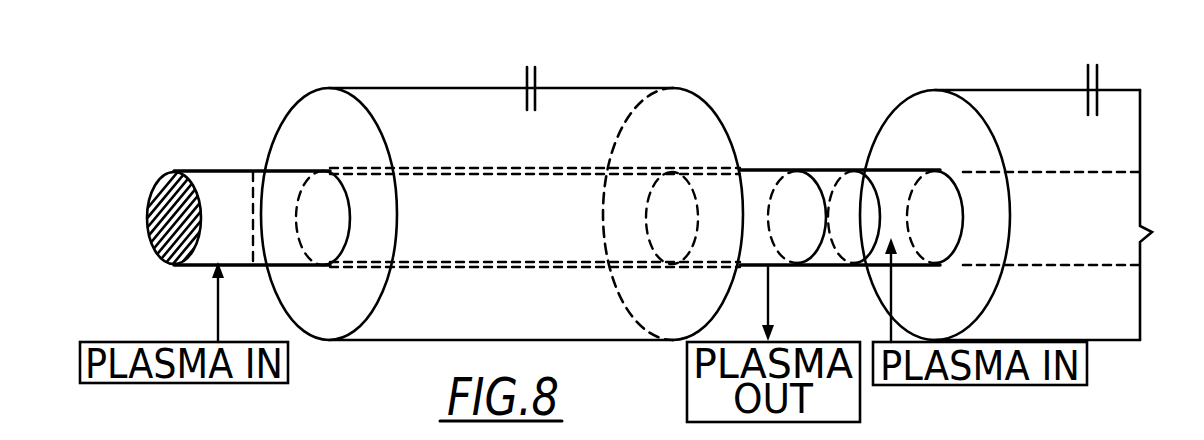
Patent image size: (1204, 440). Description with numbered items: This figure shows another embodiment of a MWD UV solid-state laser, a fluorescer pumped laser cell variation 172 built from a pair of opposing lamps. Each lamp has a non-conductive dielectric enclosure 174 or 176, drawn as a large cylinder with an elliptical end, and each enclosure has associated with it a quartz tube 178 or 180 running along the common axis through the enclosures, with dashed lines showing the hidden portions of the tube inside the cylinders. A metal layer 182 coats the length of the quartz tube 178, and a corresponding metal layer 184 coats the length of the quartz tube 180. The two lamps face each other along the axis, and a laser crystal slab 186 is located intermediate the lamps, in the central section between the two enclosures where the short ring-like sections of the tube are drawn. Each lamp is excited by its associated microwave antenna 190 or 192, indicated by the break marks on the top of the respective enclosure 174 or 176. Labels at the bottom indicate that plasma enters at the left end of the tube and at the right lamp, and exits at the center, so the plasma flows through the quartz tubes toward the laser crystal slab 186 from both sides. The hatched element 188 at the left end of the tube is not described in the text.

The fluorescer pumped laser cell variation 172 is at (840, 90).
The non-conductive dielectric enclosure 174 is at (417, 88).
The non-conductive dielectric enclosure 176 is at (1018, 90).
The quartz tube 178 is at (211, 186).
The quartz tube 180 is at (903, 190).
The metal layer 182 is at (250, 197).
The metal layer 184 is at (867, 176).
The laser crystal slab 186 is at (827, 256).
The end plug 188 is at (148, 184).
The microwave antenna 190 is at (538, 88).
The microwave antenna 192 is at (1100, 86).